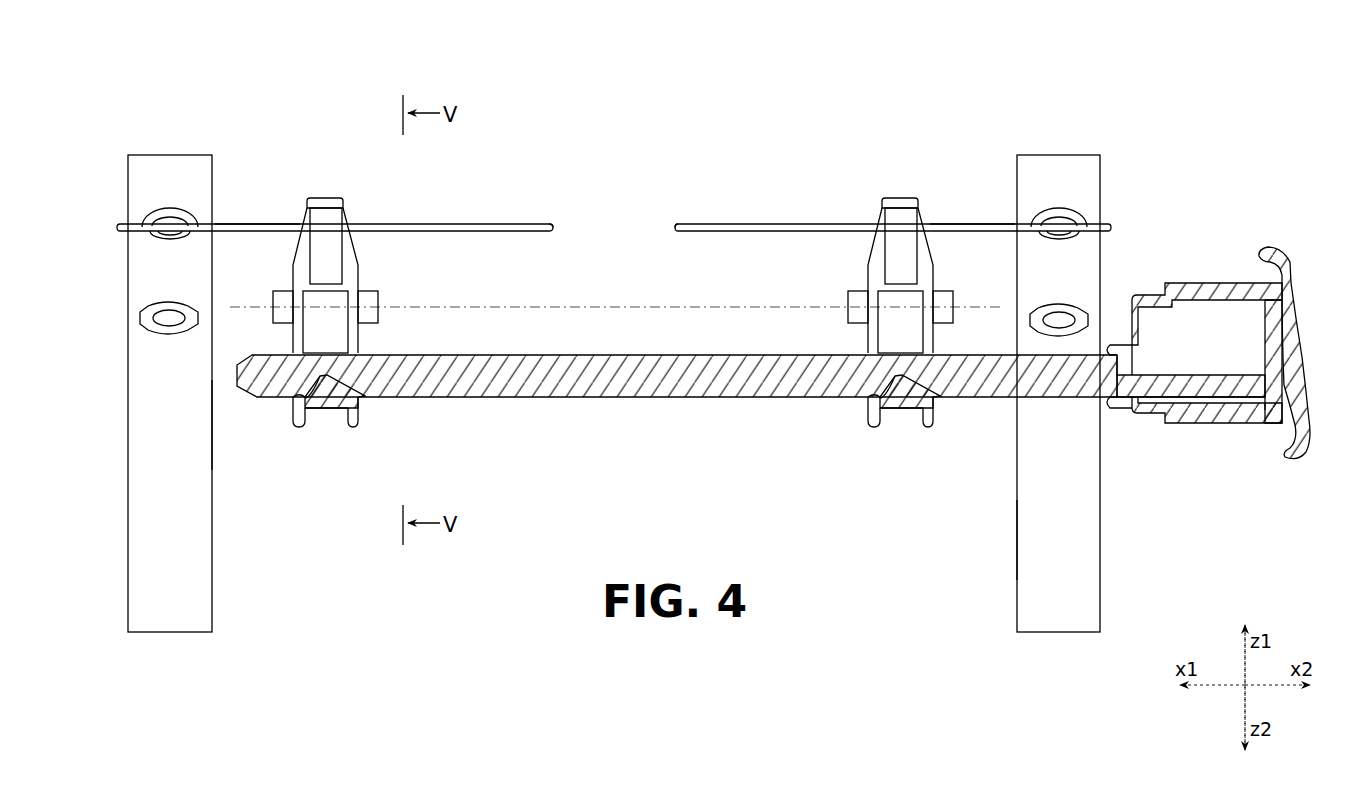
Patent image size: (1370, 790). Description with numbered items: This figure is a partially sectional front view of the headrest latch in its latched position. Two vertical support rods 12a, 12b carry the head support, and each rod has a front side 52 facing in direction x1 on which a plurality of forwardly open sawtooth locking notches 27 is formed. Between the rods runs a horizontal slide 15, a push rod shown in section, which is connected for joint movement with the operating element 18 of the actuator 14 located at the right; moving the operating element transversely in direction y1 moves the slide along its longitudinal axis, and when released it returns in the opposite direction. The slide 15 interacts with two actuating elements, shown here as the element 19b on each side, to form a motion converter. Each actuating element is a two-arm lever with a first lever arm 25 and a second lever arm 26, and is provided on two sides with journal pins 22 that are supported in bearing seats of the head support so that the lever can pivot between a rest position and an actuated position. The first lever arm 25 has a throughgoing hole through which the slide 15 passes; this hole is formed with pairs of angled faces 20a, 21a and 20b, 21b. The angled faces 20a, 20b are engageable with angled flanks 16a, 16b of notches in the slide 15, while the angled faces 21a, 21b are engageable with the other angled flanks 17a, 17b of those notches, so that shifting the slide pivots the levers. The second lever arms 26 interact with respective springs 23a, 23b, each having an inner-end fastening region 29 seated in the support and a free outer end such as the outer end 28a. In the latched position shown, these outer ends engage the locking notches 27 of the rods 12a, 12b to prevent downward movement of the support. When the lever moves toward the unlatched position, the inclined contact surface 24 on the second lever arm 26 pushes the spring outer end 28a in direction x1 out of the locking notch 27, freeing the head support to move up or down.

The support rod 12a is at (1030, 608).
The support rod 12b is at (200, 608).
The actuator 14 is at (1124, 433).
The slide 15 is at (618, 398).
The angled flank 16a is at (910, 390).
The angled flank 16b is at (352, 410).
The angled flank 17a is at (886, 410).
The angled flank 17b is at (312, 410).
The operating element 18 is at (1284, 252).
The actuating element 19b is at (290, 268).
The angled face 20a is at (925, 380).
The angled face 20b is at (340, 380).
The angled face 21a is at (870, 385).
The angled face 21b is at (300, 393).
The journal pin 22 is at (370, 318).
The spring 23a is at (752, 223).
The spring 23b is at (470, 223).
The contact surface 24 is at (336, 262).
The first lever arm 25 is at (368, 410).
The second lever arm 26 is at (328, 195).
The locking notch 27 is at (170, 207).
The outer end 28a is at (229, 217).
The fastening region 29 is at (556, 222).
The front side 52 is at (142, 424).